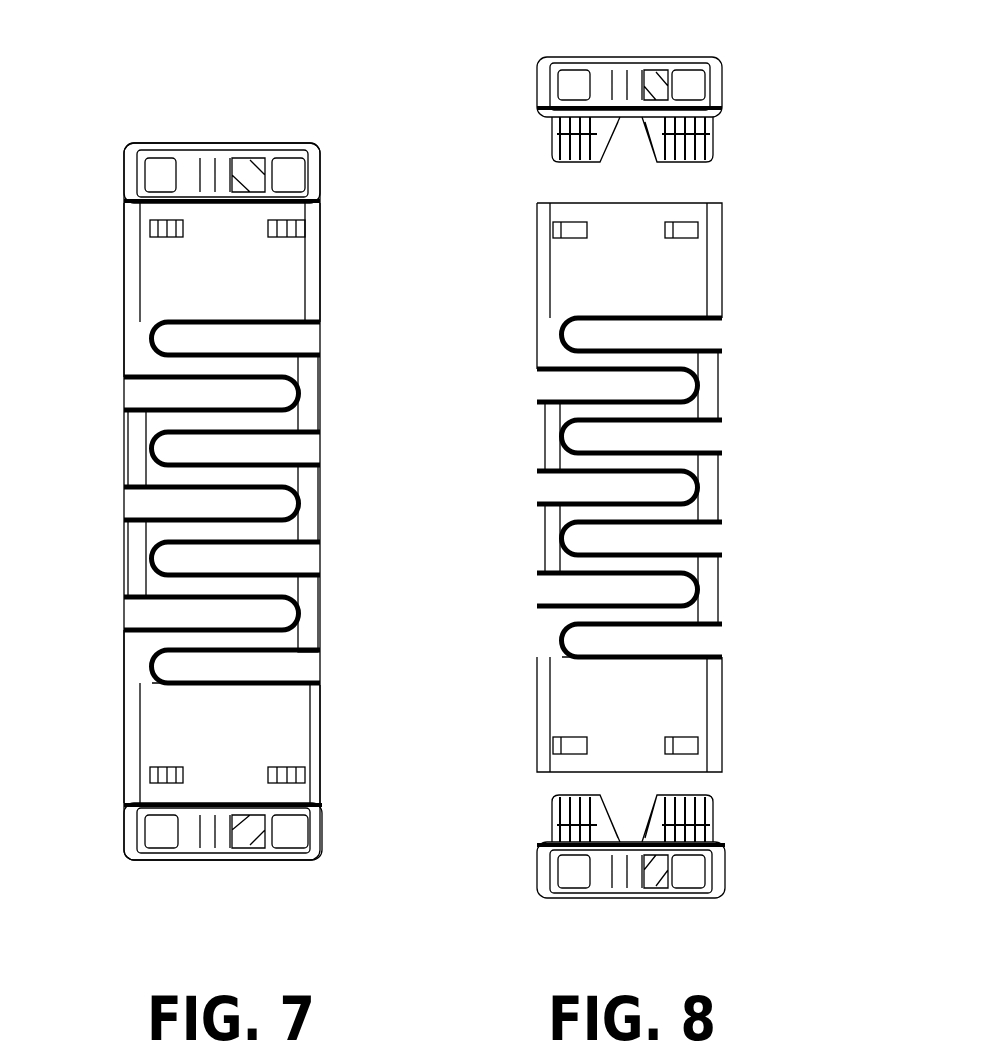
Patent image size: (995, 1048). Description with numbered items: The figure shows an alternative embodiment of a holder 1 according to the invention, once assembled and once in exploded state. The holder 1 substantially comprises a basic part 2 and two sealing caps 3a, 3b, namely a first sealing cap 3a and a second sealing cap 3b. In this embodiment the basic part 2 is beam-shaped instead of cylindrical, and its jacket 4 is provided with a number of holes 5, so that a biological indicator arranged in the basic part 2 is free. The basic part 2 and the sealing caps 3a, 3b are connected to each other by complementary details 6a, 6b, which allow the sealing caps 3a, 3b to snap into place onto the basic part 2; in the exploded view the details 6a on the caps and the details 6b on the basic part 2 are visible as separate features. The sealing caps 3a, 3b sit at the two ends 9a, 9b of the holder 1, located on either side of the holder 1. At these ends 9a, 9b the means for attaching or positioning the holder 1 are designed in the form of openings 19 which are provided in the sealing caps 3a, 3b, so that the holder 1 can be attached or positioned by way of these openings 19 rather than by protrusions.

In FIG. 7, the holder 1 is at (94, 121).
In FIG. 8, the holder 1 is at (508, 86).
In FIG. 7, the basic part 2 is at (300, 296).
In FIG. 8, the basic part 2 is at (710, 295).
In FIG. 7, the first sealing cap 3a is at (150, 176).
In FIG. 8, the first sealing cap 3a is at (545, 105).
In FIG. 7, the second sealing cap 3b is at (150, 840).
In FIG. 8, the second sealing cap 3b is at (548, 875).
In FIG. 7, the jacket 4 is at (150, 440).
In FIG. 8, the jacket 4 is at (555, 430).
In FIG. 7, the holes 5 is at (150, 500).
In FIG. 8, the holes 5 is at (555, 487).
In FIG. 8, the complementary detail 6a is at (555, 152).
In FIG. 8, the complementary detail 6b is at (560, 230).
In FIG. 8, the end 9a is at (792, 217).
In FIG. 8, the end 9b is at (795, 762).
In FIG. 7, the openings 19 is at (160, 165).
In FIG. 8, the openings 19 is at (570, 75).